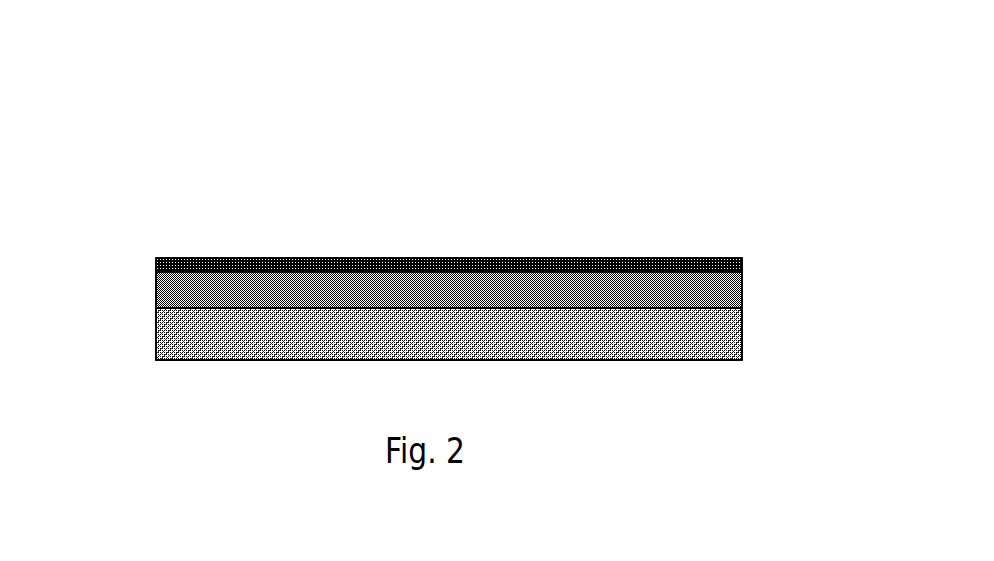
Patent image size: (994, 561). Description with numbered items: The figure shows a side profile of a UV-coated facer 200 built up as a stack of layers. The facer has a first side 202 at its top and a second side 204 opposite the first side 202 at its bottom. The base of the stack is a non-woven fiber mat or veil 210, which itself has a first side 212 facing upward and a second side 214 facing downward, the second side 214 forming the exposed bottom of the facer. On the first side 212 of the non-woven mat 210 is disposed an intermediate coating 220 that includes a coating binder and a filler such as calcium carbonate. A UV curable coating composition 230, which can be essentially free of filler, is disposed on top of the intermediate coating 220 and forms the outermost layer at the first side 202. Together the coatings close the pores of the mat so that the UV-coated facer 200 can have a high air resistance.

The UV-coated facer 200 is at (314, 143).
The first side 202 is at (149, 229).
The second side 204 is at (727, 393).
The non-woven fiber mat 210 is at (742, 323).
The first side of the non-woven mat 212 is at (165, 302).
The second side of the non-woven mat 214 is at (209, 371).
The intermediate coating 220 is at (742, 289).
The UV curable coating composition 230 is at (742, 260).